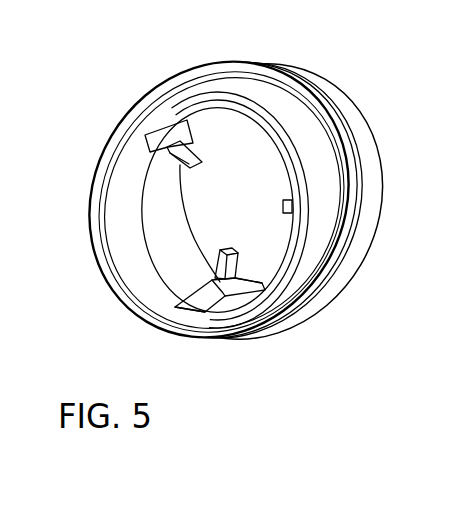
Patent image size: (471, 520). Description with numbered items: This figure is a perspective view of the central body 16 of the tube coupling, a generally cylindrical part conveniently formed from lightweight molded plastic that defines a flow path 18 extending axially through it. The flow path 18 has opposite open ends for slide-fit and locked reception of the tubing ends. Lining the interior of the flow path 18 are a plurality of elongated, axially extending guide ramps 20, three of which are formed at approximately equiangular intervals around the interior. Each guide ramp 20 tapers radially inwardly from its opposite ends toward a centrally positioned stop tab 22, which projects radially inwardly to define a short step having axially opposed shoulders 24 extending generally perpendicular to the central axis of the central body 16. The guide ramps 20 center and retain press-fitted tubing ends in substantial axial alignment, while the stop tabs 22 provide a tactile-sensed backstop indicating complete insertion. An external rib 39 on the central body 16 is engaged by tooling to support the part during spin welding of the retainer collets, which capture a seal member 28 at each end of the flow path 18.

The central body 16 is at (236, 201).
The flow path 18 is at (167, 216).
The guide ramp 20 is at (151, 252).
The stop tab 22 is at (309, 139).
The shoulder 24 is at (284, 317).
The seal member 28 is at (470, 432).
The external rib 39 is at (222, 195).